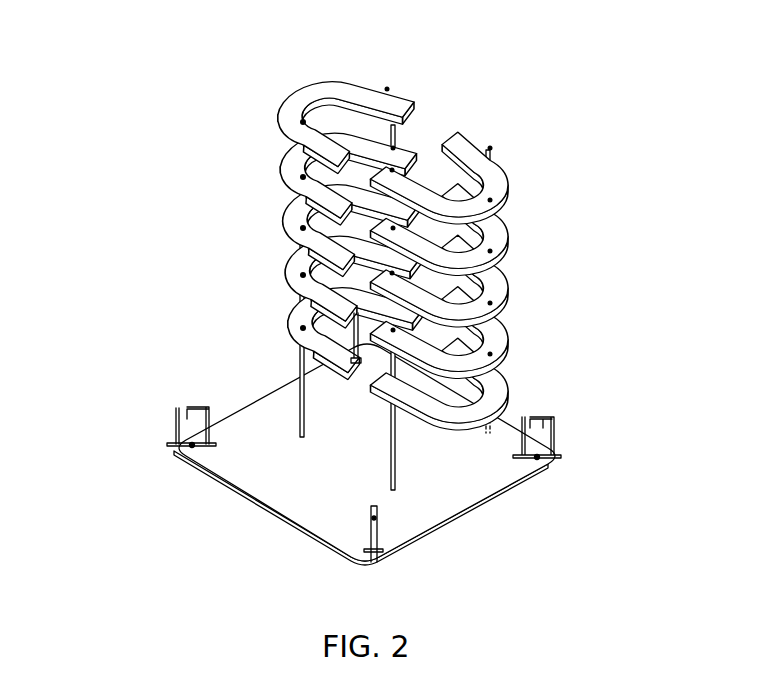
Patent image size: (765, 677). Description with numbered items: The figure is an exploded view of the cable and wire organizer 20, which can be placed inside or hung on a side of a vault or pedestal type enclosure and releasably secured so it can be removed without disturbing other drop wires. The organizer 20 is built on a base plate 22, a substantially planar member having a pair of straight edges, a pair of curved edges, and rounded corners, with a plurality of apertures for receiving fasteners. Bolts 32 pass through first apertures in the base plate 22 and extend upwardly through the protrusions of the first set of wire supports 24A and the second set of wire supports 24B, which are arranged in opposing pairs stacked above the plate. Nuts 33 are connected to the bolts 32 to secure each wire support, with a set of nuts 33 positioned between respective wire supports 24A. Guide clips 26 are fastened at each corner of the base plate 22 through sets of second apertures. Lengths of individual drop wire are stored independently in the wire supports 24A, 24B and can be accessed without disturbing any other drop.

The organizer 20 is at (385, 230).
The base plate 22 is at (281, 496).
The first set of wire supports 24A is at (285, 232).
The second set of wire supports 24B is at (509, 284).
The guide clip 26 is at (174, 423).
The bolt 32 is at (300, 380).
The nut 33 is at (538, 93).